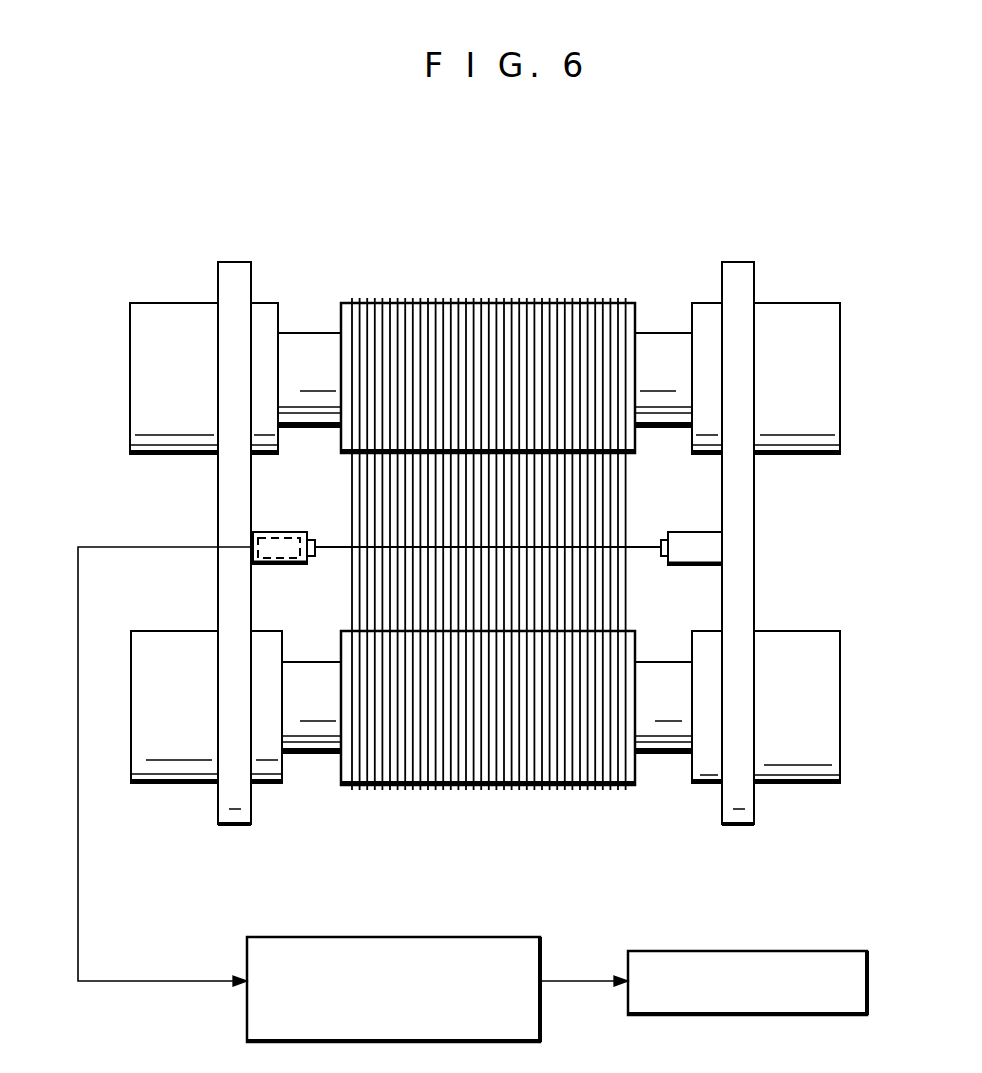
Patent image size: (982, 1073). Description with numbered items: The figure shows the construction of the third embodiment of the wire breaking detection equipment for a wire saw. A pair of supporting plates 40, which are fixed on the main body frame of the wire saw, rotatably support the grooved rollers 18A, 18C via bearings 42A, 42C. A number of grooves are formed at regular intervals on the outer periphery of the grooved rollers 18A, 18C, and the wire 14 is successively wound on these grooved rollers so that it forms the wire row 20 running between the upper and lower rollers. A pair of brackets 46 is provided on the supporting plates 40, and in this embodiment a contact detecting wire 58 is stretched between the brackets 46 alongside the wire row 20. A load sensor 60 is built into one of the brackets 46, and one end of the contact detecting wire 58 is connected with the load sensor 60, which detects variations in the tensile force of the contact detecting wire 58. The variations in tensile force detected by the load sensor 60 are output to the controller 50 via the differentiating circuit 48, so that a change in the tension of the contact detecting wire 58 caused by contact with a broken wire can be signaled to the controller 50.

The wire 14 is at (624, 495).
The grooved roller 18A is at (625, 303).
The grooved roller 18C is at (351, 778).
The wire row 20 is at (430, 292).
The supporting plate 40 is at (233, 268).
The bearing 42A is at (169, 305).
The bearing 42C is at (165, 780).
The bracket 46 is at (285, 565).
The differentiating circuit 48 is at (487, 936).
The controller 50 is at (760, 950).
The contact detecting wire 58 is at (560, 548).
The load sensor 60 is at (278, 537).